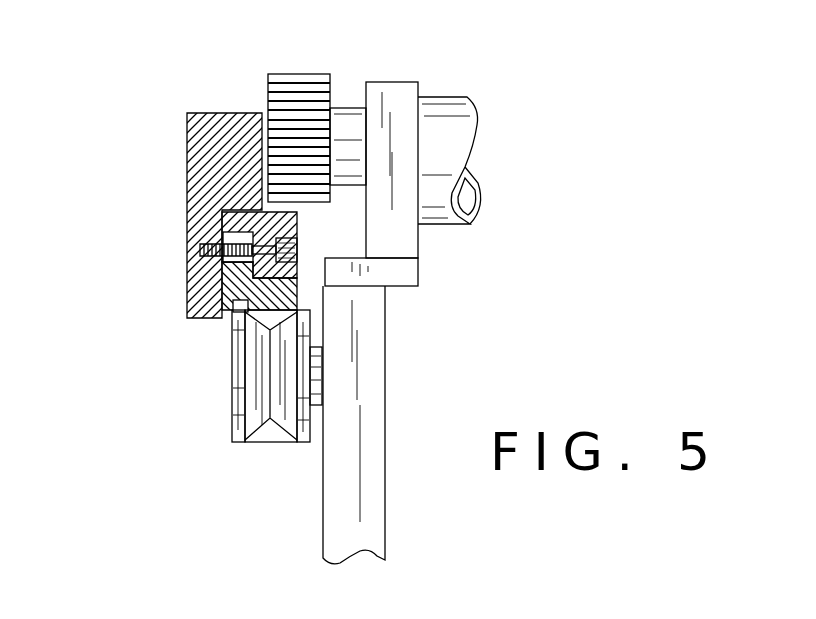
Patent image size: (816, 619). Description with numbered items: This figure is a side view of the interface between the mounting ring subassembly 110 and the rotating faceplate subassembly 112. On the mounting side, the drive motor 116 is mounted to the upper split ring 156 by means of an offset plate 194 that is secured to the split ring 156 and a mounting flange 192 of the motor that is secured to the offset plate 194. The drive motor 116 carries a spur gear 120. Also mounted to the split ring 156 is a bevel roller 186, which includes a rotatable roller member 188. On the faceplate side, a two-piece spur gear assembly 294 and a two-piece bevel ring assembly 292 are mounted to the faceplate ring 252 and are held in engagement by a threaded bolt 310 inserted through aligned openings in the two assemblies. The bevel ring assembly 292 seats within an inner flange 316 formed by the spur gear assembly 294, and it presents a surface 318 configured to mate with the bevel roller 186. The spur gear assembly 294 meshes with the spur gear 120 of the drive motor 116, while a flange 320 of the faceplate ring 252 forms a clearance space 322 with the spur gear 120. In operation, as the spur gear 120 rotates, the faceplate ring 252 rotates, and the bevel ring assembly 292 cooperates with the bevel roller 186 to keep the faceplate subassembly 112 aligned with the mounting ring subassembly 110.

The faceplate subassembly 112 is at (152, 78).
The mounting ring subassembly 110 is at (440, 72).
The drive motor 116 is at (446, 136).
The spur gear 120 is at (282, 73).
The clearance space 322 is at (261, 105).
The flange 320 is at (205, 113).
The spur gear assembly 294 is at (245, 203).
The inner flange 316 is at (226, 235).
The threaded bolt 310 is at (299, 252).
The faceplate ring 252 is at (172, 295).
The bevel ring assembly 292 is at (228, 316).
The surface 318 is at (281, 314).
The mounting flange 192 is at (393, 232).
The offset plate 194 is at (405, 275).
The split ring 156 is at (385, 402).
The bevel roller 186 is at (271, 462).
The roller member 188 is at (255, 443).